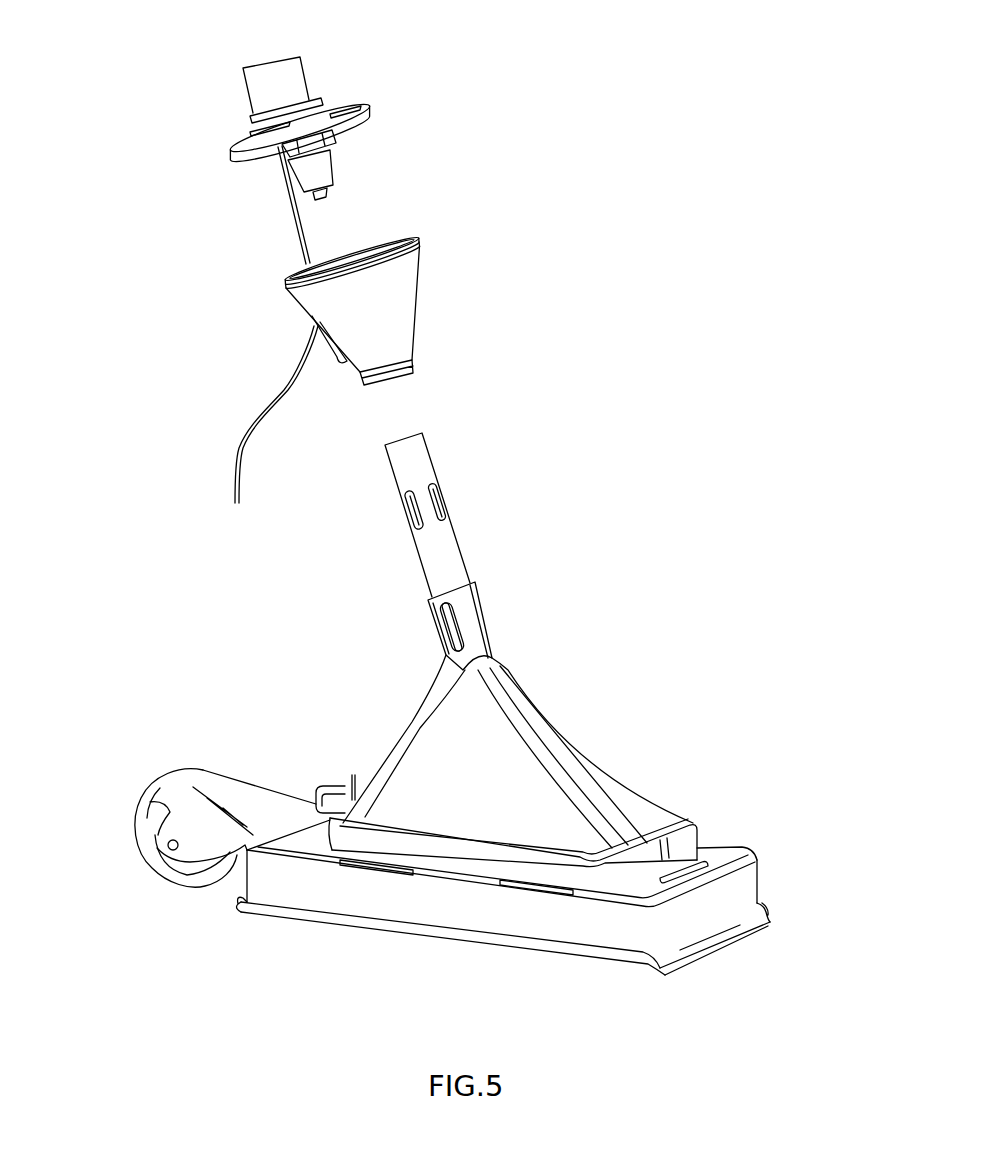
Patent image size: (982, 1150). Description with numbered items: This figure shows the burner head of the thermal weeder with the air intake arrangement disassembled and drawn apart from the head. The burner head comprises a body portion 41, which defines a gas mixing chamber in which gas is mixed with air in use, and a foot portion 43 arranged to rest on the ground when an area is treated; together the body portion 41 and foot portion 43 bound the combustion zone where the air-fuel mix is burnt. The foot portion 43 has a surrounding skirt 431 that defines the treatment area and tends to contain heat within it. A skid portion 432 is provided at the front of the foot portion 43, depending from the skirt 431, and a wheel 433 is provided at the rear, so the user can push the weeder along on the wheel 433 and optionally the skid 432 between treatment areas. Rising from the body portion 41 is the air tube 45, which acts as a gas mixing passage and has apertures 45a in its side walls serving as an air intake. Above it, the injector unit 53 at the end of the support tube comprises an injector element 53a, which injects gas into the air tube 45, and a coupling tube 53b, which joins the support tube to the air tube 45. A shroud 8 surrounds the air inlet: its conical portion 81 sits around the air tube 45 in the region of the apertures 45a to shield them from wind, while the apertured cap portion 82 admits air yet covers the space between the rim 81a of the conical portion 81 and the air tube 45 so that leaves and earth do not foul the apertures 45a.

The cap portion 82 is at (367, 100).
The injector unit 53 is at (339, 188).
The injector element 53a is at (330, 195).
The coupling tube 53b is at (308, 180).
The shroud 8 is at (359, 363).
The conical portion 81 is at (359, 368).
The rim 81a is at (284, 277).
The air tube 45 is at (485, 507).
The apertures 45a is at (445, 500).
The body portion 41 is at (617, 765).
The foot portion 43 is at (461, 909).
The skirt 431 is at (593, 940).
The skid portion 432 is at (740, 932).
The wheel 433 is at (180, 867).